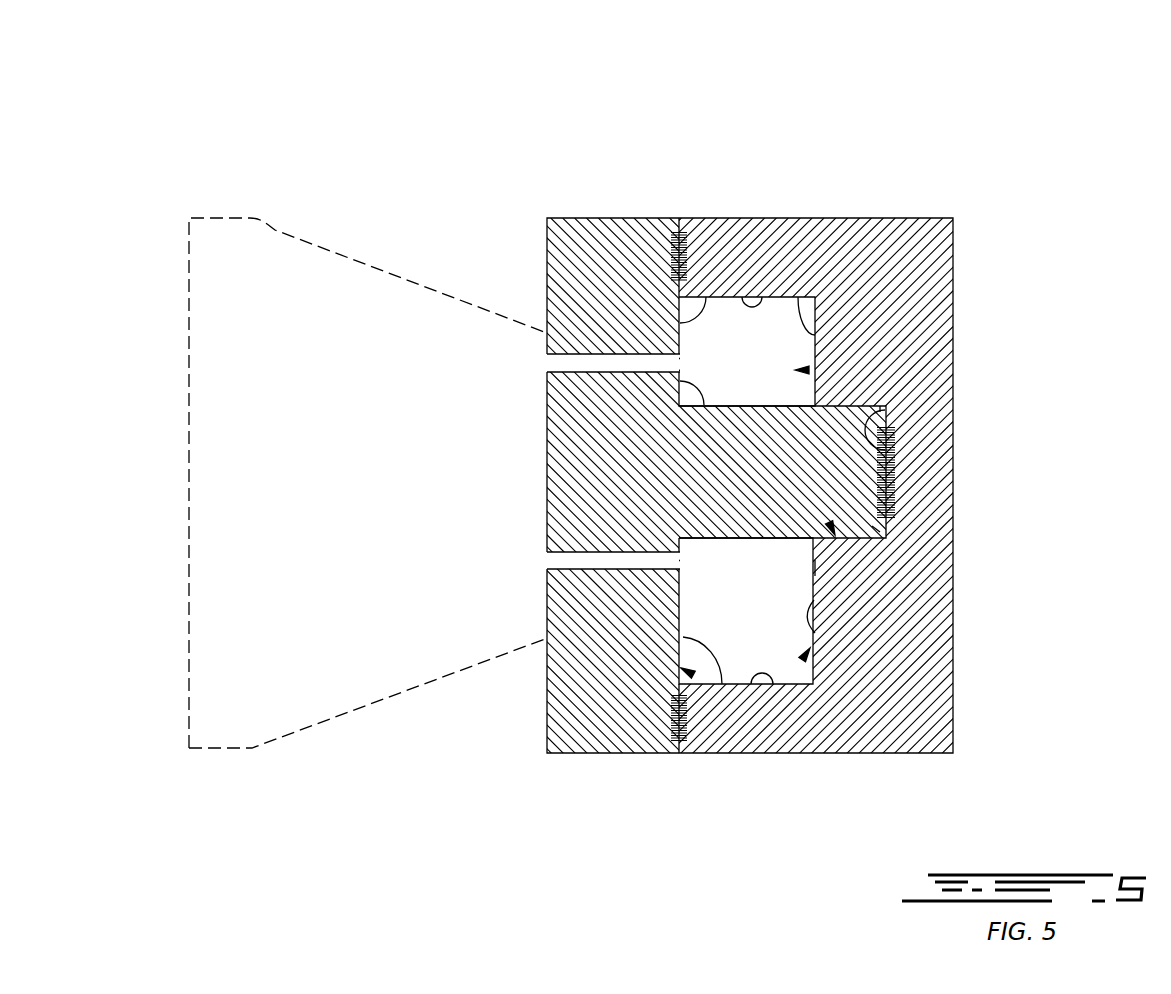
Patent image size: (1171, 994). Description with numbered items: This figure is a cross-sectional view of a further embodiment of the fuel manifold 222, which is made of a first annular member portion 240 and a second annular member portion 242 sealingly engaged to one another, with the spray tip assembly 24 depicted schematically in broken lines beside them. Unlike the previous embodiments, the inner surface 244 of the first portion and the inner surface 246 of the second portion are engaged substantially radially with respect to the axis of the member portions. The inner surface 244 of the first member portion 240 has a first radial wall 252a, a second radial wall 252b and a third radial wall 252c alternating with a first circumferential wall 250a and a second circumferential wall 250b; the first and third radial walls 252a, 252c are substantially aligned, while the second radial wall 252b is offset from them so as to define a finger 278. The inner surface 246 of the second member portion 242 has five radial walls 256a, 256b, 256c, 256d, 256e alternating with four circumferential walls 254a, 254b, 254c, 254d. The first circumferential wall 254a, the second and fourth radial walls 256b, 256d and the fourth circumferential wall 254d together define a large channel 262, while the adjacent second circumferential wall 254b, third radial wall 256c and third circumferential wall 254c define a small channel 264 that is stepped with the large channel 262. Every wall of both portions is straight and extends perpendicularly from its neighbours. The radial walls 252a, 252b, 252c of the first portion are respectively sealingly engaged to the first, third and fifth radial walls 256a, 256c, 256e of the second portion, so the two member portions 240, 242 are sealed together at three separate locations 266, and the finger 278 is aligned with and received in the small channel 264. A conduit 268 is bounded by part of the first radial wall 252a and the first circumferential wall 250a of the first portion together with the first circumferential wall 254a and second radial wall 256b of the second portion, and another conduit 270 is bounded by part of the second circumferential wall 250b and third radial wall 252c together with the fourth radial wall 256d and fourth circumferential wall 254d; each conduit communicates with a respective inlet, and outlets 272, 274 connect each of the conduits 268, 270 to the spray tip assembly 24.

The spray tip assembly 24 is at (275, 252).
The manifold 222 is at (980, 168).
The first annular member portion 240 is at (566, 753).
The second annular member portion 242 is at (878, 218).
The inner surface 244 is at (693, 675).
The inner surface 246 is at (802, 660).
The first circumferential wall 250a is at (683, 383).
The second circumferential wall 250b is at (815, 568).
The first radial wall 252a is at (707, 297).
The second radial wall 252b is at (885, 408).
The third radial wall 252c is at (722, 684).
The first circumferential wall 254a is at (767, 297).
The second circumferential wall 254b is at (887, 406).
The third circumferential wall 254c is at (872, 526).
The fourth circumferential wall 254d is at (774, 684).
The first radial wall 256a is at (677, 218).
The second radial wall 256b is at (798, 297).
The third radial wall 256c is at (887, 407).
The fourth radial wall 256d is at (815, 633).
The fifth radial wall 256e is at (678, 687).
The large channel 262 is at (809, 370).
The small channel 264 is at (829, 522).
The sealing locations 266 is at (673, 265).
The conduit 268 is at (722, 357).
The conduit 270 is at (773, 629).
The outlet 272 is at (567, 361).
The outlet 274 is at (557, 559).
The finger 278 is at (780, 466).